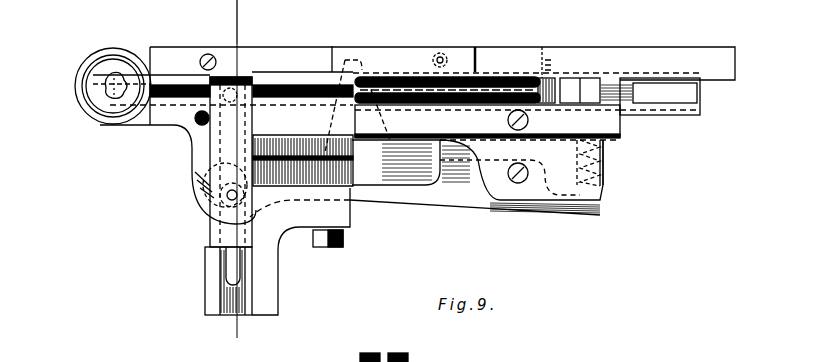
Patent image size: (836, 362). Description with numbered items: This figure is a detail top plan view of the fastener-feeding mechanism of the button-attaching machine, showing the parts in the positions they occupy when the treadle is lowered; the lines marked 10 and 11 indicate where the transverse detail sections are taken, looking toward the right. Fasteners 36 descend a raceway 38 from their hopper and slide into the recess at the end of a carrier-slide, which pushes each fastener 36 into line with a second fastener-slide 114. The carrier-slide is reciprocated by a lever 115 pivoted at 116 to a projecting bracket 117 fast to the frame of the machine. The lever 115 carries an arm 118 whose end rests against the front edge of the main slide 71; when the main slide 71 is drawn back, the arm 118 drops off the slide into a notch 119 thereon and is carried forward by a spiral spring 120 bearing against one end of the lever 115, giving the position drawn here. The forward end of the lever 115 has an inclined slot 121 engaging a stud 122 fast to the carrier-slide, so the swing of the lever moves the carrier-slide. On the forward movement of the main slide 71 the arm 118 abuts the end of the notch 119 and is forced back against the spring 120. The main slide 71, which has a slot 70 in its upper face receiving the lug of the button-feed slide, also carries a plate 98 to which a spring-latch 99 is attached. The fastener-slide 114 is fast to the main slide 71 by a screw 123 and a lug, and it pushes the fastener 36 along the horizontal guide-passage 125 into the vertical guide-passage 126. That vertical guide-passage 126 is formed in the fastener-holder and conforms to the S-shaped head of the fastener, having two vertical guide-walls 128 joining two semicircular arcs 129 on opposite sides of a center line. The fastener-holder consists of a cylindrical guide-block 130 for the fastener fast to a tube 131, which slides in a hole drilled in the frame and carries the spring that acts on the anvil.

The section line 10 is at (248, 22).
The section line 11 is at (237, 184).
The fastener 36 is at (228, 78).
The raceway 38 is at (411, 180).
The slot 70 is at (620, 78).
The main slide 71 is at (690, 100).
The plate 98 is at (685, 60).
The spring-latch 99 is at (455, 50).
The fastener-slide 114 is at (385, 110).
The lever 115 is at (465, 197).
The pivot 116 is at (520, 183).
The bracket 117 is at (608, 172).
The arm 118 is at (352, 48).
The notch 119 is at (490, 70).
The spiral spring 120 is at (608, 144).
The inclined slot 121 is at (205, 200).
The stud 122 is at (227, 210).
The screw 123 is at (551, 100).
The horizontal guide-passage 125 is at (178, 96).
The vertical guide-passage 126 is at (105, 85).
The vertical guide-walls 128 is at (124, 82).
The semicircular arcs 129 is at (115, 70).
The cylindrical guide-block 130 is at (100, 75).
The tube 131 is at (110, 92).